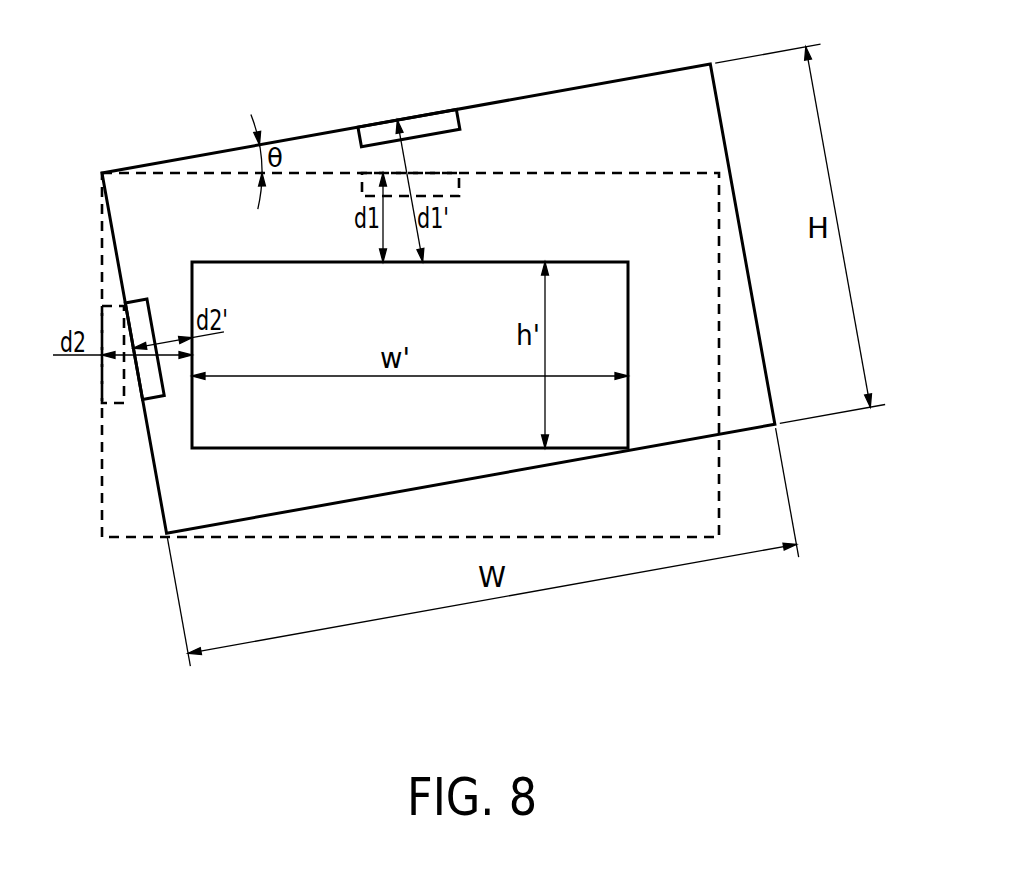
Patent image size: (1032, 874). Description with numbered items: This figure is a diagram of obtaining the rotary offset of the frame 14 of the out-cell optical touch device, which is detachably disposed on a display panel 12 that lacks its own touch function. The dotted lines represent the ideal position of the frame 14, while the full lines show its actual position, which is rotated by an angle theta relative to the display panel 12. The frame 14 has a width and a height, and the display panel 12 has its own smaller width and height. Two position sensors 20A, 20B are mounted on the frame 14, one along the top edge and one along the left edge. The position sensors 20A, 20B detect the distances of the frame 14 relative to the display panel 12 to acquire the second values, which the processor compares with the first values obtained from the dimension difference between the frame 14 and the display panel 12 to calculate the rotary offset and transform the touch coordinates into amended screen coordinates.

The frame 14 is at (613, 81).
The display panel 12 is at (605, 262).
The position sensor 20A is at (433, 123).
The position sensor 20B is at (140, 310).